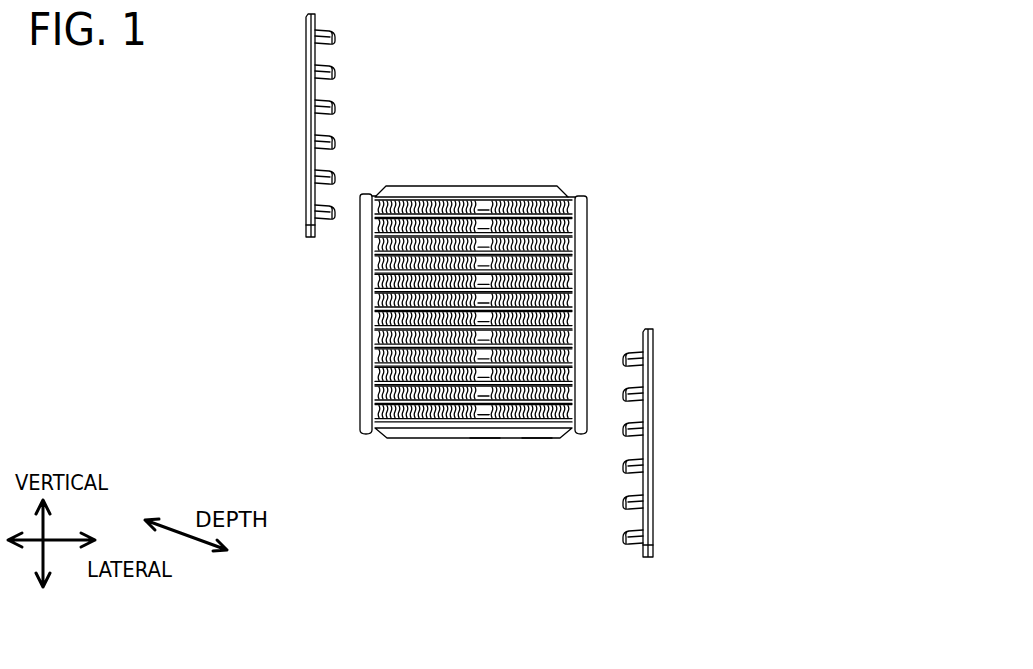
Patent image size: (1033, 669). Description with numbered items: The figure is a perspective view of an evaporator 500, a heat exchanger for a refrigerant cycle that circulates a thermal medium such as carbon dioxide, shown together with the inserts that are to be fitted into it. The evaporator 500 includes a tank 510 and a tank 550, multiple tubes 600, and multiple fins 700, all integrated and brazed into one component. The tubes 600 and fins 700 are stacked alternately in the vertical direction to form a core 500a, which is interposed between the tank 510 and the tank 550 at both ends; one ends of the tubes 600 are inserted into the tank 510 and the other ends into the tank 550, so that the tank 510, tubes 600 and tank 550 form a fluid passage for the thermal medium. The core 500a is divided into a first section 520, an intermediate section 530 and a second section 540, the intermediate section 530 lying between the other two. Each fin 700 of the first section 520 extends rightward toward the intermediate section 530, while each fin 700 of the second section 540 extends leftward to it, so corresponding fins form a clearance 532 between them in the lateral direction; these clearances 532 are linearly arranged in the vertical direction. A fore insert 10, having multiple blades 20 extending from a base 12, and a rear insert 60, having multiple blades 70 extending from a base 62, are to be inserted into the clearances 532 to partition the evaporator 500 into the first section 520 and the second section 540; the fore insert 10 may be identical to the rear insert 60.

The fore insert 10 is at (275, 131).
The base 12 is at (305, 193).
The blades 20 is at (324, 222).
The rear insert 60 is at (694, 466).
The base 62 is at (654, 551).
The blades 70 is at (641, 549).
The evaporator 500 is at (469, 313).
The core 500a is at (507, 282).
The tank 510 is at (360, 283).
The first section 520 is at (419, 467).
The intermediate section 530 is at (490, 459).
The clearance 532 is at (485, 420).
The second section 540 is at (542, 466).
The tank 550 is at (588, 292).
The tubes 600 is at (573, 259).
The fins 700 is at (573, 213).